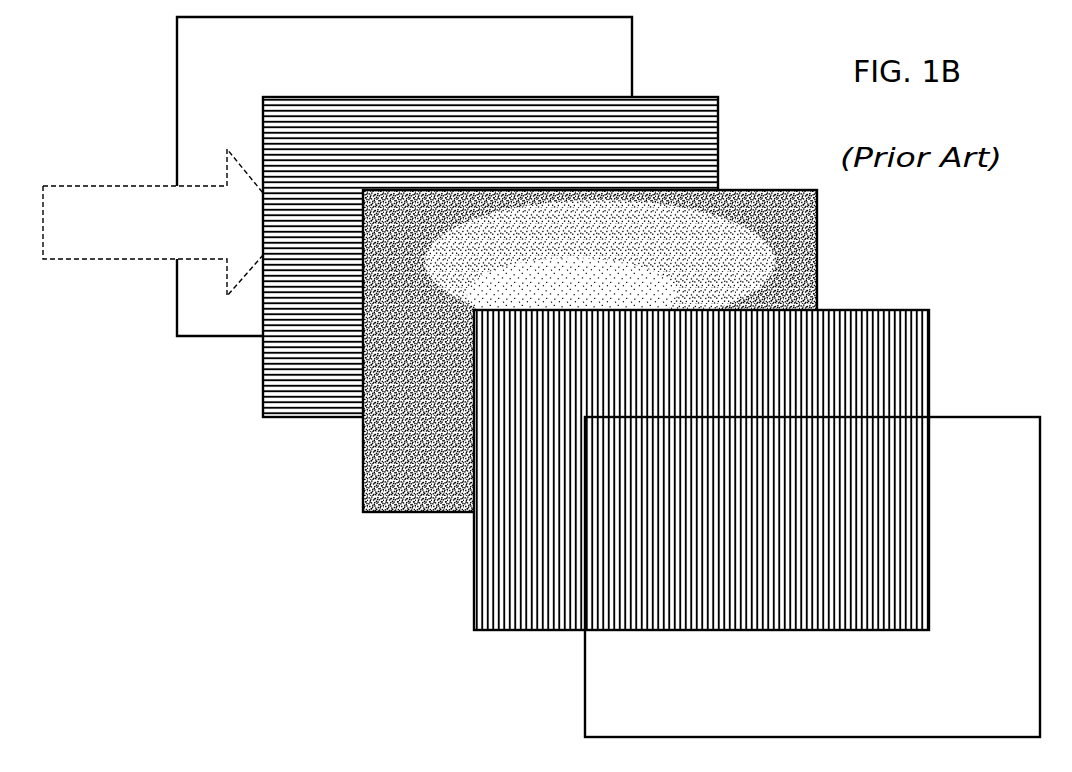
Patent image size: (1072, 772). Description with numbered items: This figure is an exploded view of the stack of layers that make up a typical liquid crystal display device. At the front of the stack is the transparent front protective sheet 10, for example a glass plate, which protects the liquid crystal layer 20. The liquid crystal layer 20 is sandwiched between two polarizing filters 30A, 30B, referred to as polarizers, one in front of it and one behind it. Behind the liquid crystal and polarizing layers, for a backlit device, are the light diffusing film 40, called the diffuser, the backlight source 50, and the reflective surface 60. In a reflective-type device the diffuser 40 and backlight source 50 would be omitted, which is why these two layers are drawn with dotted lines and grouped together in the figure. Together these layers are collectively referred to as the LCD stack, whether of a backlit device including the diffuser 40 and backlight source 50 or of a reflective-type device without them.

The transparent front protective sheet 10 is at (585, 697).
The liquid crystal layer 20 is at (363, 483).
The polarizing filter 30A is at (474, 592).
The polarizing filter 30B is at (263, 390).
The light diffusing film 40 is at (153, 184).
The backlight source 50 is at (153, 241).
The reflective surface 60 is at (178, 323).